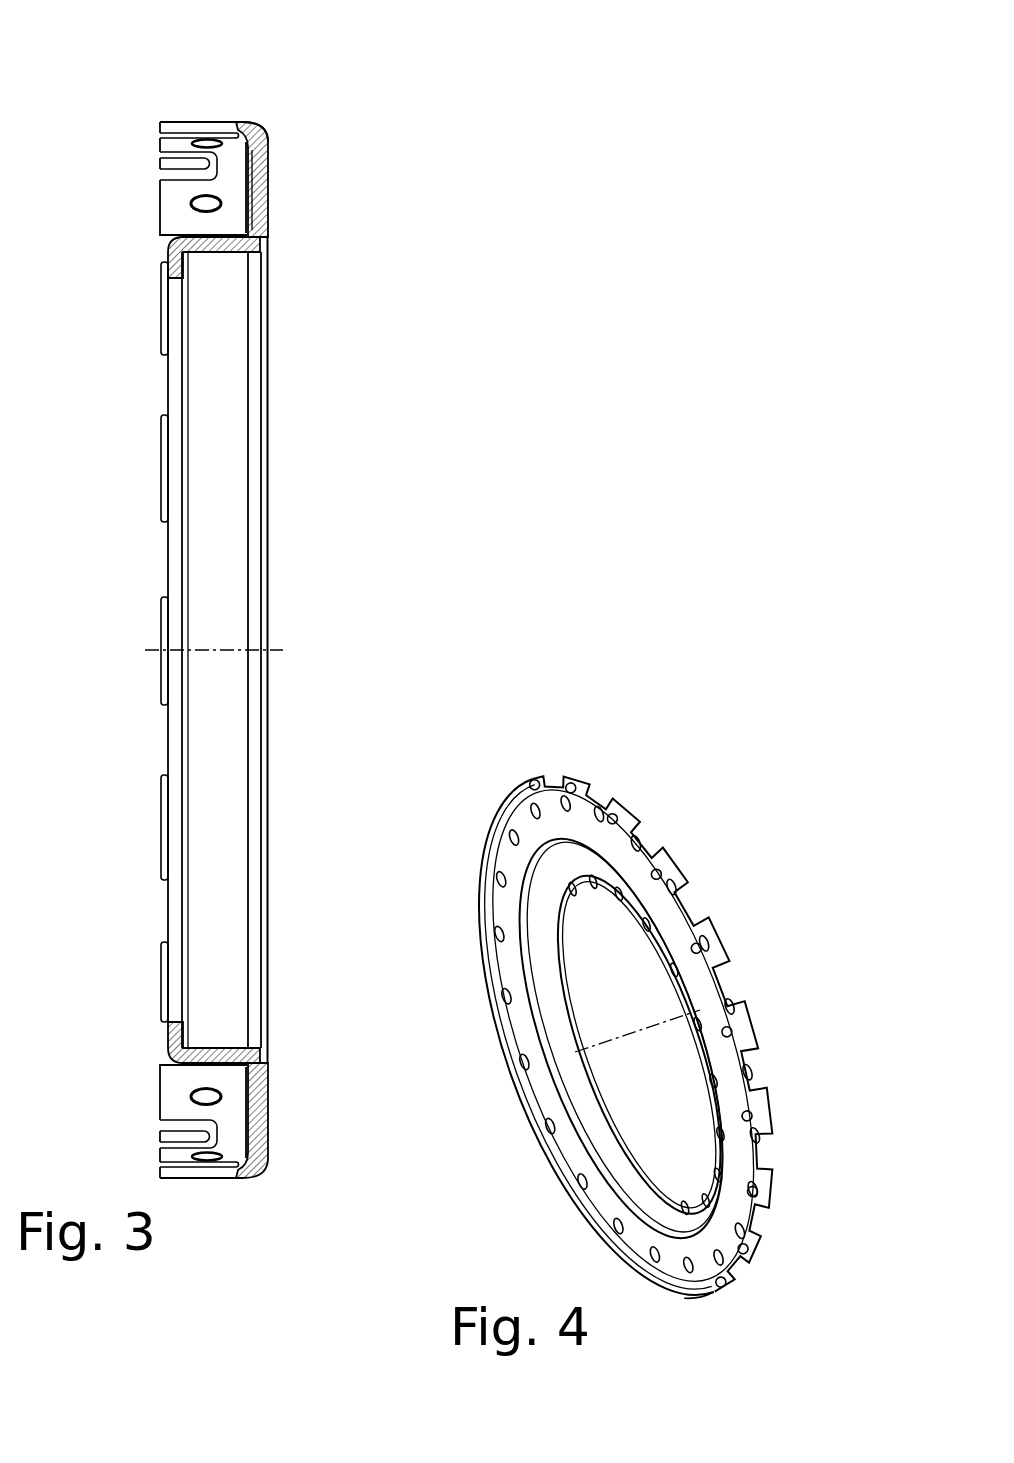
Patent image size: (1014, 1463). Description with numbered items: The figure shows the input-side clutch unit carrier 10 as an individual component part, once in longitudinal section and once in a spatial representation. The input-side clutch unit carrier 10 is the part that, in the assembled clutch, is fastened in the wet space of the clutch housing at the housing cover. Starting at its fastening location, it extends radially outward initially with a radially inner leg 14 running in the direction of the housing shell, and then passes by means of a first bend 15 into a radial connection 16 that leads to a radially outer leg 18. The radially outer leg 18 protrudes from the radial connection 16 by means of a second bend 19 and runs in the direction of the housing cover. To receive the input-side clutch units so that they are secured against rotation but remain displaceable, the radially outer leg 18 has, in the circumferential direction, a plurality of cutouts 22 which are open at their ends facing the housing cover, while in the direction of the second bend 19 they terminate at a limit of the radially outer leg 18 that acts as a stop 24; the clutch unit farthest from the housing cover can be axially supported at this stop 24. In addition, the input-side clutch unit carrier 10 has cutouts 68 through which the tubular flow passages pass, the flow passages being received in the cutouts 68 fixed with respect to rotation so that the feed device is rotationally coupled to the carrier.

In FIG. 3, the input-side clutch unit carrier 10 is at (200, 1035).
In FIG. 4, the input-side clutch unit carrier 10 is at (398, 758).
In FIG. 3, the radially inner leg 14 is at (222, 252).
In FIG. 4, the radially inner leg 14 is at (610, 1153).
In FIG. 3, the first bend 15 is at (270, 247).
In FIG. 4, the first bend 15 is at (560, 1045).
In FIG. 3, the radial connection 16 is at (270, 173).
In FIG. 4, the radial connection 16 is at (557, 1120).
In FIG. 3, the radially outer leg 18 is at (243, 123).
In FIG. 4, the radially outer leg 18 is at (742, 1115).
In FIG. 3, the second bend 19 is at (270, 138).
In FIG. 4, the second bend 19 is at (714, 1275).
In FIG. 3, the cutouts 22 is at (187, 165).
In FIG. 4, the cutouts 22 is at (722, 991).
In FIG. 3, the stop 24 is at (221, 122).
In FIG. 4, the stop 24 is at (684, 911).
In FIG. 3, the cutouts 68 is at (253, 203).
In FIG. 4, the cutouts 68 is at (495, 940).